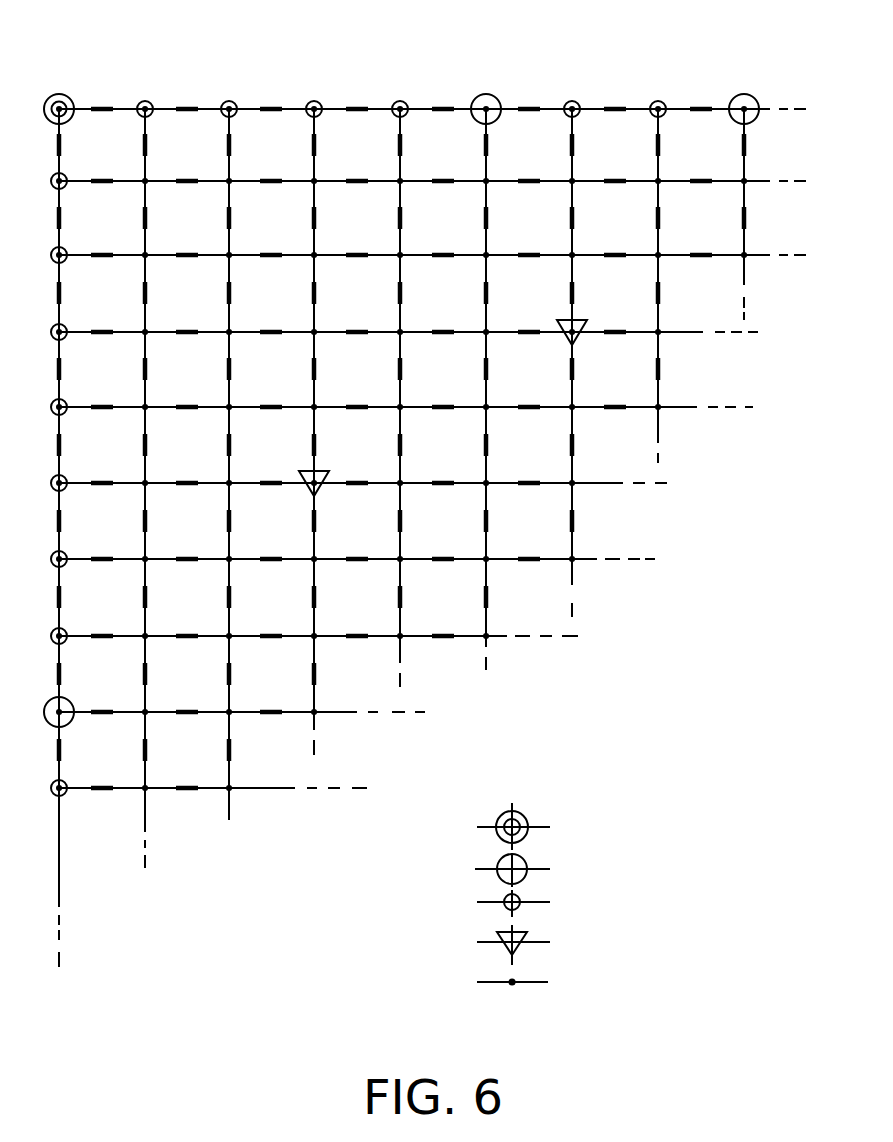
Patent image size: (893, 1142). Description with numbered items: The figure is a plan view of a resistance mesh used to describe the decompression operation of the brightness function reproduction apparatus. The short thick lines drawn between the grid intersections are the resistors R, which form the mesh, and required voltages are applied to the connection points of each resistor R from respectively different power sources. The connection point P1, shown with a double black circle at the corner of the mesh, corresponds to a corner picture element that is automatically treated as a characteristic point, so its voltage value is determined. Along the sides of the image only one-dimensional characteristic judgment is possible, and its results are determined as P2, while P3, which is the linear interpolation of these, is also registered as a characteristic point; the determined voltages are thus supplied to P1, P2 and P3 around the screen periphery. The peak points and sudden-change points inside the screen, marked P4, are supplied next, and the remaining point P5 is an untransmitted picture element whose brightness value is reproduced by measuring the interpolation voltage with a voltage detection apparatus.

The resistor R is at (192, 810).
The connection point P1 is at (321, 472).
The connection point P2 is at (401, 492).
The connection point P3 is at (358, 513).
The connection point P4 is at (447, 642).
The connection point P5 is at (401, 557).